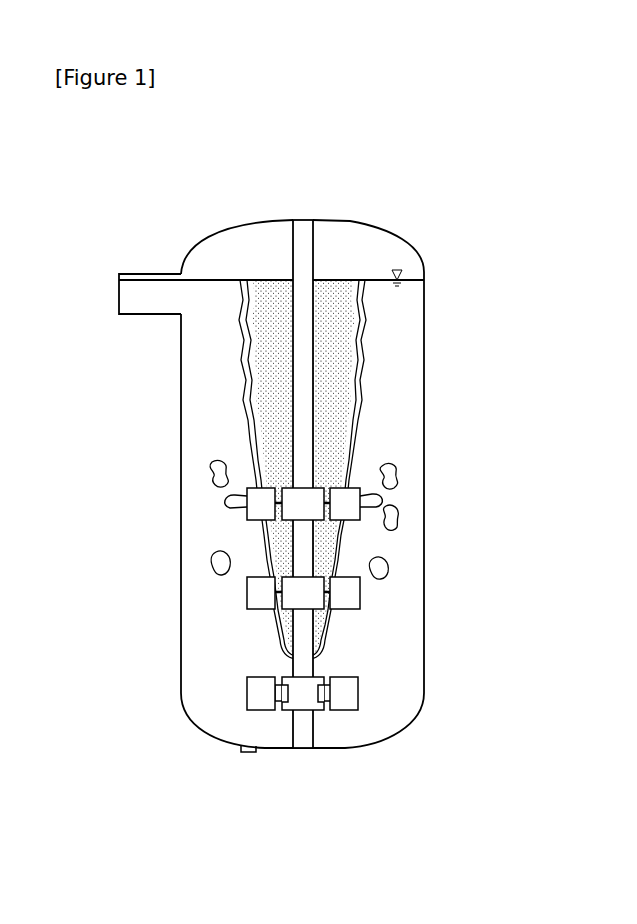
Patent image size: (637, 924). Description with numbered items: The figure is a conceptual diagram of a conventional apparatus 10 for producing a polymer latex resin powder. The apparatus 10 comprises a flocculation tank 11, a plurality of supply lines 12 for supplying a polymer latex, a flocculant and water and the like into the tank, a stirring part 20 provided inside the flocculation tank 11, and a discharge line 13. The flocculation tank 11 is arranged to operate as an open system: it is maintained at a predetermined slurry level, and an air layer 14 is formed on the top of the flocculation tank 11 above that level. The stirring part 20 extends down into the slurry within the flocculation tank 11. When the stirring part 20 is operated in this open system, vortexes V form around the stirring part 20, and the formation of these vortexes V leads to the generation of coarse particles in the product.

The apparatus for producing a polymer latex resin powder 10 is at (93, 146).
The flocculation tank 11 is at (424, 412).
The supply lines 12 is at (237, 746).
The discharge line 13 is at (140, 273).
The air layer 14 is at (246, 248).
The stirring part 20 is at (327, 664).
The vortexes V is at (357, 344).